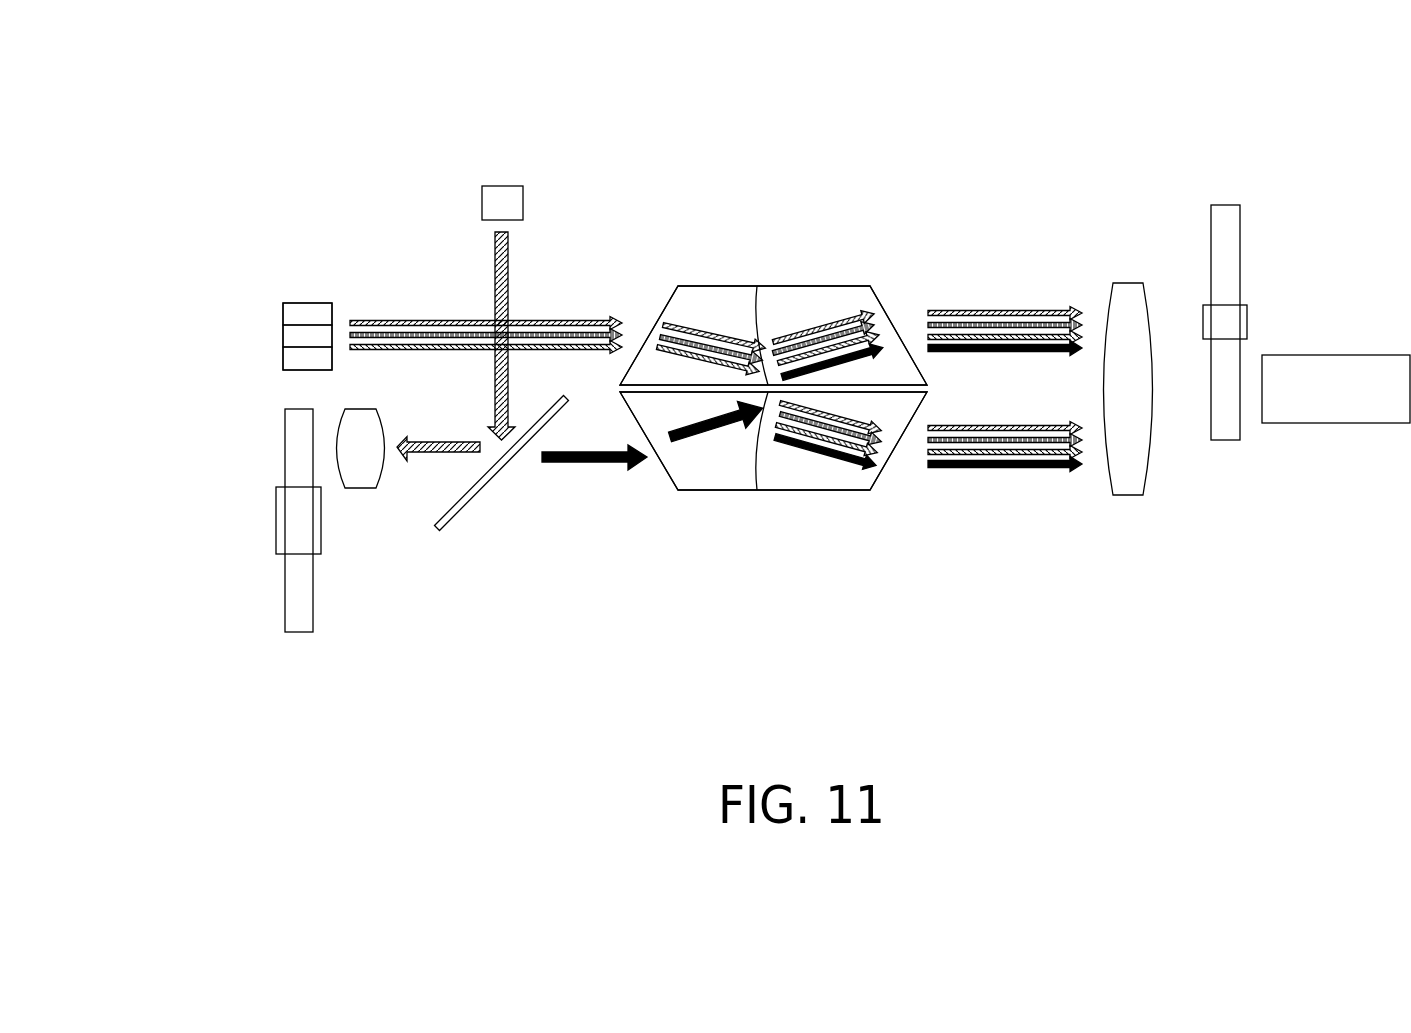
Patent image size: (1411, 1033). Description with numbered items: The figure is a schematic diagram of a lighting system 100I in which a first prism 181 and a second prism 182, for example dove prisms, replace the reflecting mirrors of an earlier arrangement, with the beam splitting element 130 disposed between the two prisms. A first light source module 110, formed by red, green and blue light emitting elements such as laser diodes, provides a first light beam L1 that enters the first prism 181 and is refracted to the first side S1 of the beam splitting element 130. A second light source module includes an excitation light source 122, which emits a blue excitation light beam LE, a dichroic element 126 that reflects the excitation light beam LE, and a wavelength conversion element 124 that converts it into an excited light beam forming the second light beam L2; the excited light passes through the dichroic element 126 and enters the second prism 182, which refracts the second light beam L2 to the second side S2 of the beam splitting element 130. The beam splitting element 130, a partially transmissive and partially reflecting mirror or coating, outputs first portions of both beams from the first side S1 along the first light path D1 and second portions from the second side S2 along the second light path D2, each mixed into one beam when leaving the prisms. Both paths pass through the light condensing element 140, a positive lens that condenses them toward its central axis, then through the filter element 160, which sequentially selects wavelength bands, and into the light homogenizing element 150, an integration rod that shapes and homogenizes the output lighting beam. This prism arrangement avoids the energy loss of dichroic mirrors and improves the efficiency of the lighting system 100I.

The lighting system 100I is at (1398, 708).
The first light source module 110 is at (146, 283).
The excitation light source 122 is at (502, 192).
The wavelength conversion element 124 is at (298, 625).
The dichroic element 126 is at (465, 508).
The beam splitting element 130 is at (923, 390).
The light condensing element 140 is at (1128, 285).
The light homogenizing element 150 is at (1364, 365).
The filter element 160 is at (1225, 208).
The first prism 181 is at (707, 297).
The second prism 182 is at (707, 480).
The first light beam L1 is at (372, 322).
The second light beam L2 is at (567, 463).
The excitation light beam LE is at (508, 268).
The first side S1 is at (757, 286).
The second side S2 is at (757, 490).
The first light path D1 is at (995, 310).
The second light path D2 is at (995, 470).